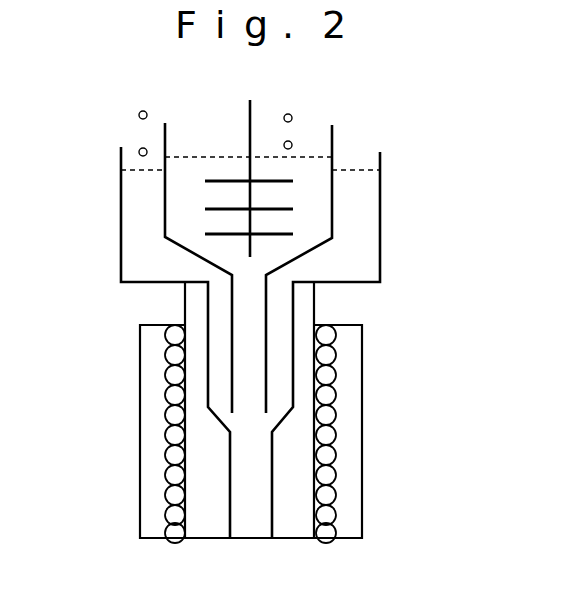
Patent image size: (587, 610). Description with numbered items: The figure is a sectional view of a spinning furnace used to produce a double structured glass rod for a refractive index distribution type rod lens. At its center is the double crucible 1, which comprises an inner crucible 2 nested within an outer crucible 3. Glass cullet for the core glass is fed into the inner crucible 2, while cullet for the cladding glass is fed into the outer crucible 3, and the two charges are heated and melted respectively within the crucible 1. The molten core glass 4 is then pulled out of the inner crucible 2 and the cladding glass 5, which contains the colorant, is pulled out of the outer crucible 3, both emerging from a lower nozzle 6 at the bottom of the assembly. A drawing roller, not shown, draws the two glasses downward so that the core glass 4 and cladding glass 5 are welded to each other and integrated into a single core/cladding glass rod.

The double crucible 1 is at (281, 309).
The inner crucible 2 is at (333, 160).
The outer crucible 3 is at (380, 200).
The core glass 4 is at (247, 347).
The cladding glass 5 is at (222, 385).
The lower nozzle 6 is at (272, 507).